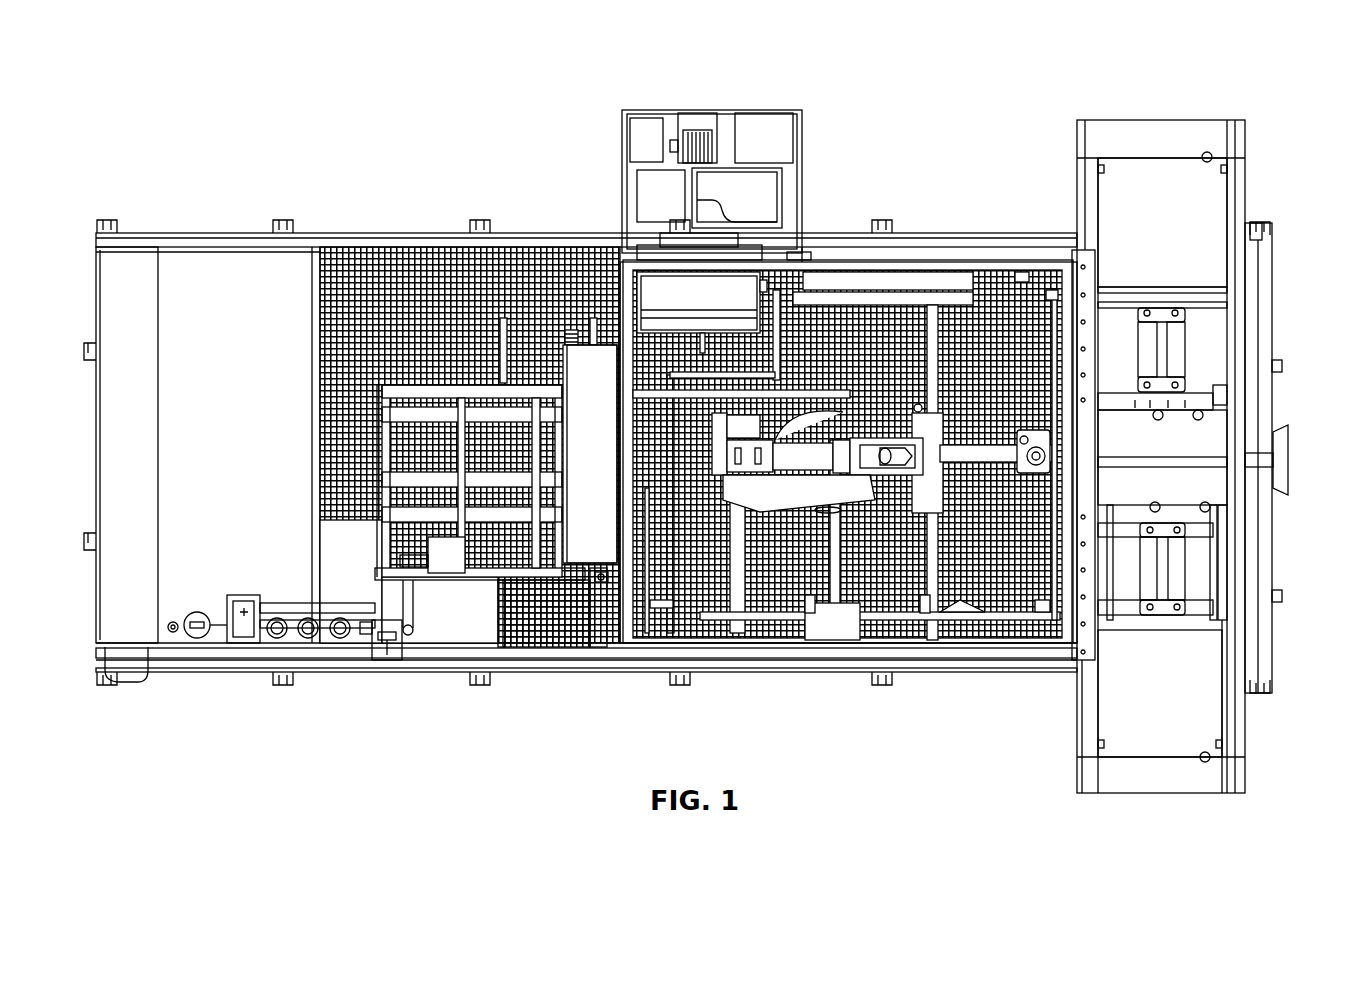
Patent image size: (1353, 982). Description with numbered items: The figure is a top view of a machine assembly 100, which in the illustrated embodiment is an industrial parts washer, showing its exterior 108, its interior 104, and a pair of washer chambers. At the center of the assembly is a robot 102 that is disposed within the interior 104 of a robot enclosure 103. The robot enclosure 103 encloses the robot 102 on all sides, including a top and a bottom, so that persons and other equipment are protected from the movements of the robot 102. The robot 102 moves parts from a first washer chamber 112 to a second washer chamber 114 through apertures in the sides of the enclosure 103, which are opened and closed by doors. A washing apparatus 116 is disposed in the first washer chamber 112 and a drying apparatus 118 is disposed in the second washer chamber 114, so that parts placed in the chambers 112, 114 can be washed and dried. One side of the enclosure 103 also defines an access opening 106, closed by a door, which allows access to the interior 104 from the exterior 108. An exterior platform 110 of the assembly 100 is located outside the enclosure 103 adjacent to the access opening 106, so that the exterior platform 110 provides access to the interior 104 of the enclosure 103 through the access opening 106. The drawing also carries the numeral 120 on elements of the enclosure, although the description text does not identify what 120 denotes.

The machine assembly 100 is at (1270, 86).
The robot 102 is at (868, 480).
The robot enclosure 103 is at (838, 263).
The interior 104 is at (934, 283).
The access opening 106 is at (600, 430).
The exterior 108 is at (581, 290).
The exterior platform 110 is at (480, 560).
The first washer chamber 112 is at (1200, 200).
The second washer chamber 114 is at (1178, 740).
The washing apparatus 116 is at (1190, 300).
The drying apparatus 118 is at (1190, 620).
The vertical panel 120 is at (655, 412).